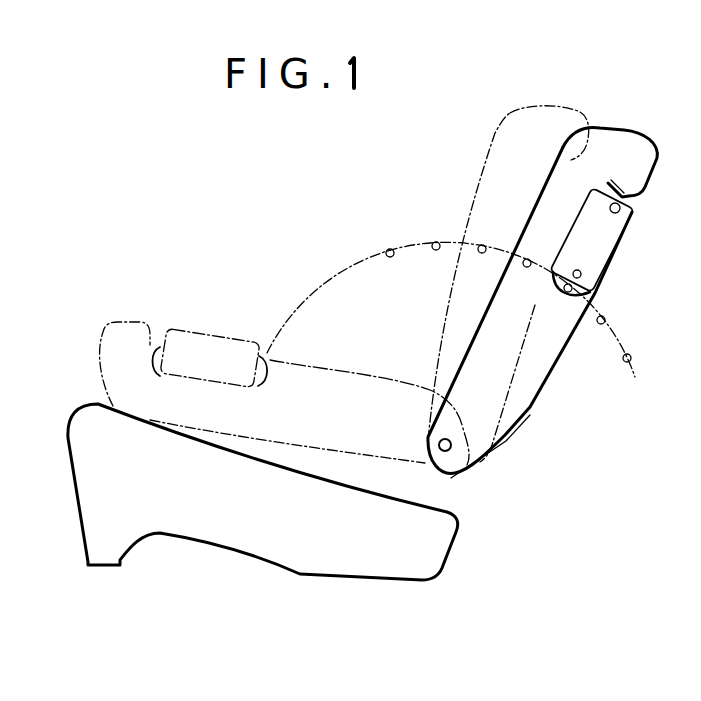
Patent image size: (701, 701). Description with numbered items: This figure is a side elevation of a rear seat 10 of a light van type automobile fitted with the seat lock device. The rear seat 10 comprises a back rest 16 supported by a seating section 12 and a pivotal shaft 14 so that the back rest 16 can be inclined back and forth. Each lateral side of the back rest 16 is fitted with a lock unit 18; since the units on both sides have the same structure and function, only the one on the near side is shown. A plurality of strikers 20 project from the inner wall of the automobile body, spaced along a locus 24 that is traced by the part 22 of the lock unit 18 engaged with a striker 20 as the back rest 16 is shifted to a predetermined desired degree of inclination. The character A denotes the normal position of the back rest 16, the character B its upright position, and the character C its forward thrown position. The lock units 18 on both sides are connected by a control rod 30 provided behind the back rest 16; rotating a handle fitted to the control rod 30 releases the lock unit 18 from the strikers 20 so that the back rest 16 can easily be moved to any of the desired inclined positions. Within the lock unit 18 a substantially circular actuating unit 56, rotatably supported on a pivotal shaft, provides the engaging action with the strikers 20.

The rear seat 10 is at (272, 243).
The seating section 12 is at (444, 535).
The pivotal shaft 14 is at (451, 451).
The back rest 16 is at (480, 331).
The lock unit 18 is at (602, 252).
The strikers 20 is at (392, 249).
The engaging part of the lock unit 22 is at (569, 293).
The locus 24 is at (303, 303).
The control rod 30 is at (620, 205).
The substantially circular actuating unit 56 is at (580, 293).
The normal position A is at (628, 136).
The upright position B is at (506, 112).
The forward thrown position C is at (116, 320).